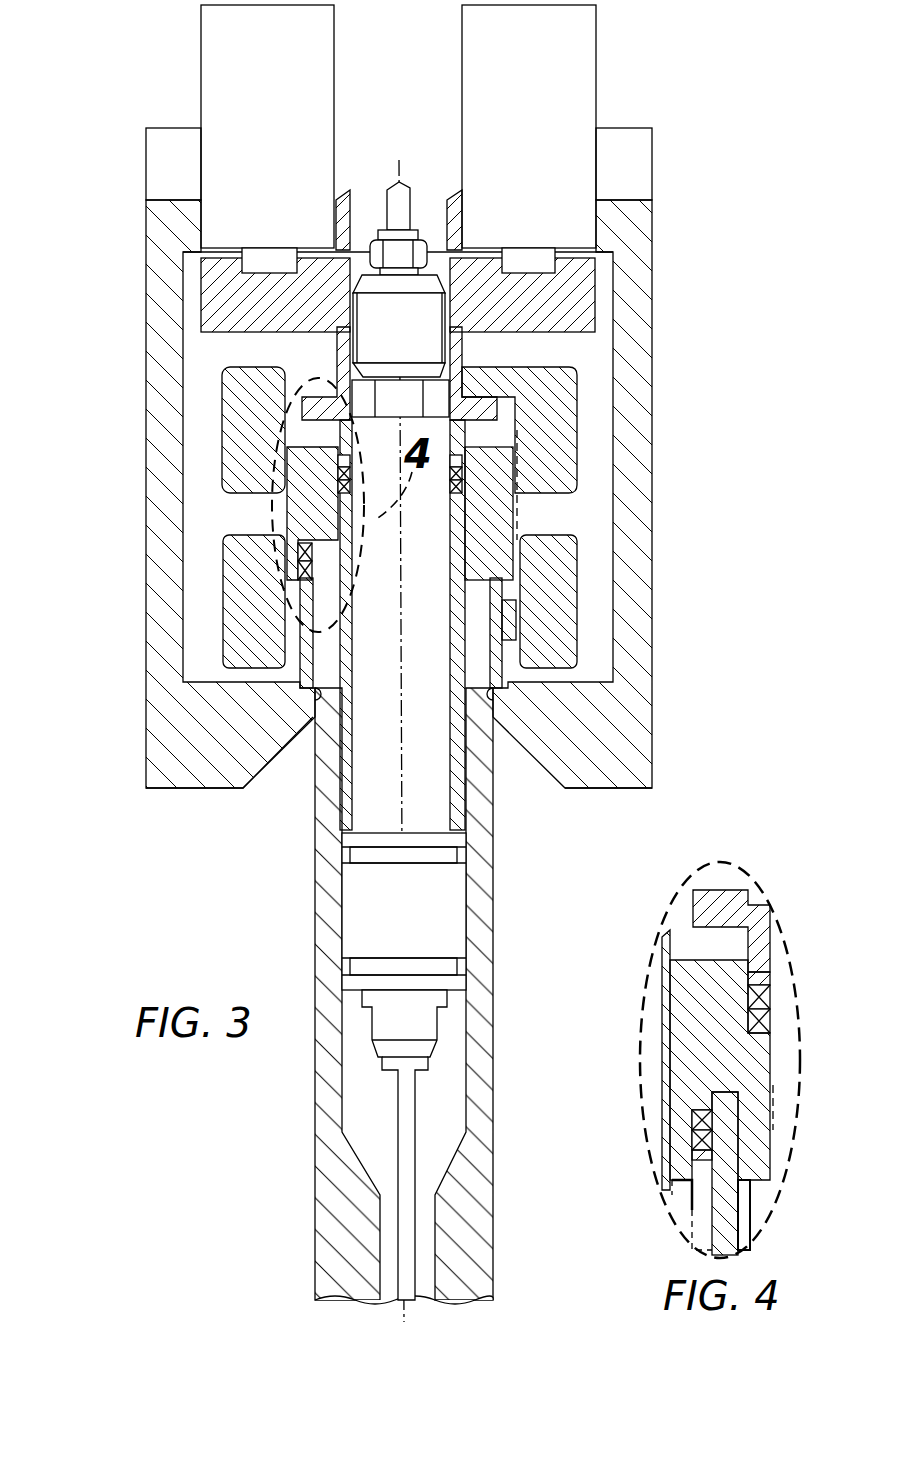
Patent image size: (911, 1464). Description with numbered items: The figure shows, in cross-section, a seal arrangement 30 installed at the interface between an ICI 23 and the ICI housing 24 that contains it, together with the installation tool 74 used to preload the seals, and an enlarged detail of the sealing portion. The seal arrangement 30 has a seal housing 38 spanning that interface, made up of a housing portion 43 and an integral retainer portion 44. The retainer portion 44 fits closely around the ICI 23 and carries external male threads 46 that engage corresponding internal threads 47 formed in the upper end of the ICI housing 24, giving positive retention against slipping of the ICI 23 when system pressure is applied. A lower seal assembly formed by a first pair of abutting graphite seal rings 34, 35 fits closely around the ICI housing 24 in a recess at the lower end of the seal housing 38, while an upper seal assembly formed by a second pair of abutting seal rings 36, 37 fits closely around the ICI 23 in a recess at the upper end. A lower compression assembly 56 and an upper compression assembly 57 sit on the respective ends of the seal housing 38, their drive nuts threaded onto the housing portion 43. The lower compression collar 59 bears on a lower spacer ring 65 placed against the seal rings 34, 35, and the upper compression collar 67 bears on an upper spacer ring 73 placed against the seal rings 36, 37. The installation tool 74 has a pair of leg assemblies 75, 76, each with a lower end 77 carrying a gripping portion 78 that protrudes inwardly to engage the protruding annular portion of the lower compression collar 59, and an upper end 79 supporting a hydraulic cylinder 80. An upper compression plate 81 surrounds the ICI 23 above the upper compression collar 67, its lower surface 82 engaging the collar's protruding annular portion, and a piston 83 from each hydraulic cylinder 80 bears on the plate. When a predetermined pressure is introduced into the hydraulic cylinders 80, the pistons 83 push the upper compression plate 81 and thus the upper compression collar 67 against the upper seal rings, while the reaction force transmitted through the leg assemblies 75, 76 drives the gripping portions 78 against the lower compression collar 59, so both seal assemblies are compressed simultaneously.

In FIG. 3, the ICI 23 is at (364, 940).
In FIG. 3, the ICI housing 24 is at (332, 846).
In FIG. 3, the seal arrangement 30 is at (756, 425).
In FIG. 4, the seal ring 34 is at (693, 1118).
In FIG. 4, the seal ring 35 is at (693, 1135).
In FIG. 4, the seal ring 36 is at (775, 1000).
In FIG. 4, the seal ring 37 is at (775, 1022).
In FIG. 3, the seal housing 38 is at (494, 518).
In FIG. 4, the housing portion 43 is at (682, 1065).
In FIG. 4, the retainer portion 44 is at (762, 1092).
In FIG. 4, the external male threads 46 is at (725, 1140).
In FIG. 4, the internal threads 47 is at (749, 1212).
In FIG. 3, the lower compression assembly 56 is at (579, 563).
In FIG. 3, the upper compression assembly 57 is at (564, 407).
In FIG. 3, the lower compression collar 59 is at (518, 627).
In FIG. 4, the lower compression collar 59 is at (690, 1222).
In FIG. 4, the lower spacer ring 65 is at (693, 1153).
In FIG. 3, the upper compression collar 67 is at (484, 422).
In FIG. 4, the upper compression collar 67 is at (770, 912).
In FIG. 4, the upper spacer ring 73 is at (775, 980).
In FIG. 3, the installation tool 74 is at (105, 298).
In FIG. 3, the leg assembly 75 is at (642, 240).
In FIG. 3, the leg assembly 76 is at (160, 498).
In FIG. 3, the lower end 77 is at (190, 775).
In FIG. 3, the gripping portion 78 is at (300, 704).
In FIG. 3, the upper end 79 is at (160, 167).
In FIG. 3, the hydraulic cylinder 80 is at (213, 67).
In FIG. 3, the upper compression plate 81 is at (602, 278).
In FIG. 3, the lower surface 82 is at (320, 332).
In FIG. 3, the piston 83 is at (272, 258).